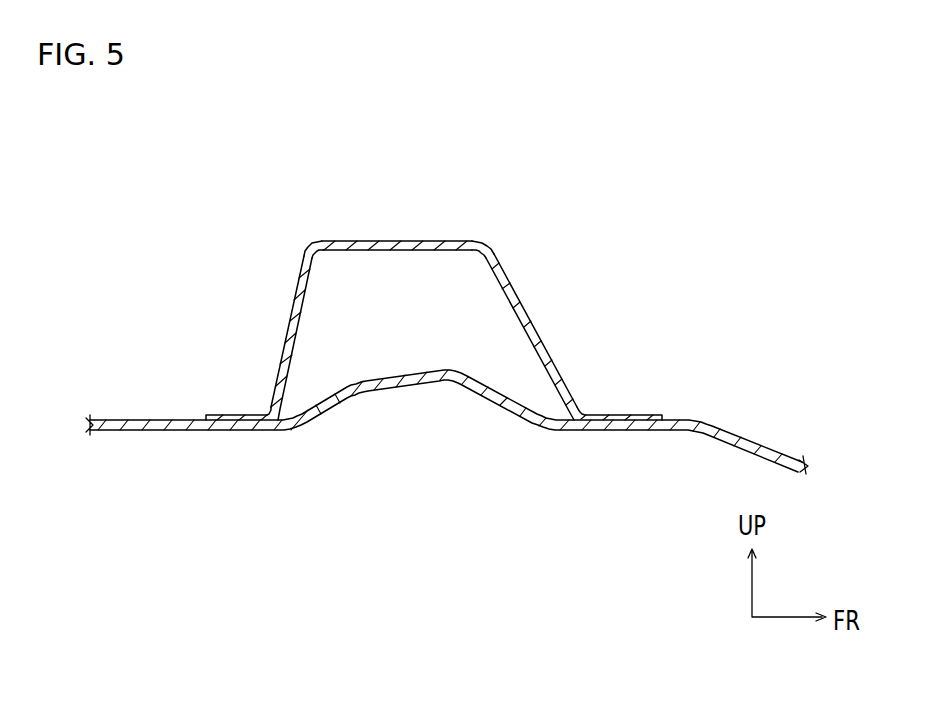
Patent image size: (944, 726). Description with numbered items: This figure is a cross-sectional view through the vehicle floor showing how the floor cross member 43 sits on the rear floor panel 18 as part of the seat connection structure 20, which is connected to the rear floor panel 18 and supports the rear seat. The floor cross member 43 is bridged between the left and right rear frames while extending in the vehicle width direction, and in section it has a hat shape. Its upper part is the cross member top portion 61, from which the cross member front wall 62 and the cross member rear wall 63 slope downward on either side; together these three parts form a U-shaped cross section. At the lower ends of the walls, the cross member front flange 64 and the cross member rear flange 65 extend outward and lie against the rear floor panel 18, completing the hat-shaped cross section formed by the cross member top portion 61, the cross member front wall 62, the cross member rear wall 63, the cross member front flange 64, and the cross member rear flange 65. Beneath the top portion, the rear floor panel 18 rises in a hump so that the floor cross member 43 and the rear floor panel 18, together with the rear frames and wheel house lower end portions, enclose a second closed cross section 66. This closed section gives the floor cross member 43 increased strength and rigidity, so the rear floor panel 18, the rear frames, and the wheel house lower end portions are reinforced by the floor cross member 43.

The rear floor panel 18 is at (412, 377).
The seat connection structure 20 is at (434, 277).
The floor cross member 43 is at (413, 241).
The cross member top portion 61 is at (458, 241).
The cross member front wall 62 is at (535, 326).
The cross member rear wall 63 is at (297, 323).
The cross member front flange 64 is at (632, 415).
The cross member rear flange 65 is at (232, 415).
The second closed cross section 66 is at (336, 242).